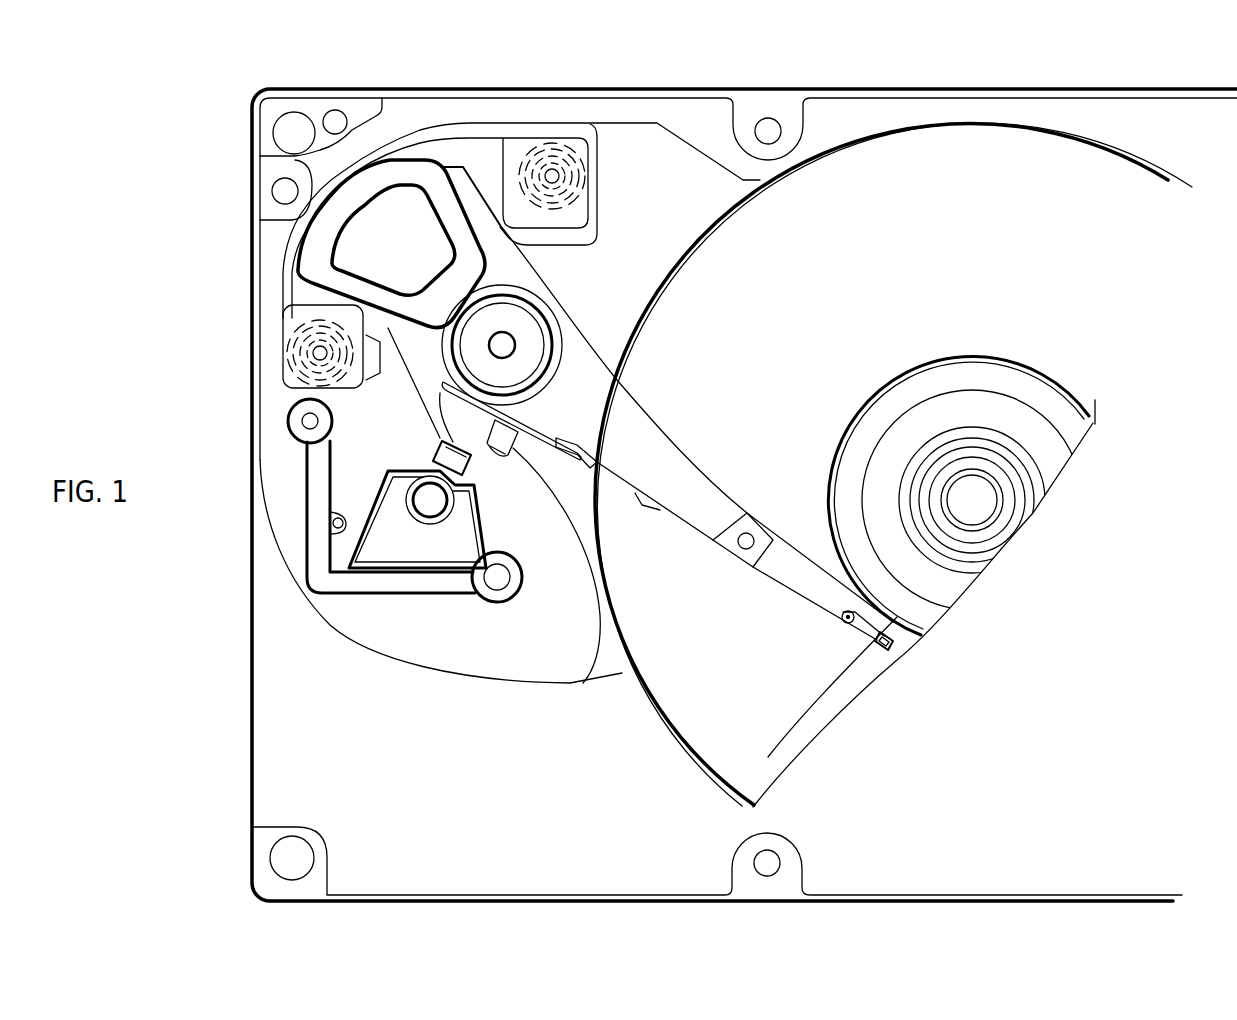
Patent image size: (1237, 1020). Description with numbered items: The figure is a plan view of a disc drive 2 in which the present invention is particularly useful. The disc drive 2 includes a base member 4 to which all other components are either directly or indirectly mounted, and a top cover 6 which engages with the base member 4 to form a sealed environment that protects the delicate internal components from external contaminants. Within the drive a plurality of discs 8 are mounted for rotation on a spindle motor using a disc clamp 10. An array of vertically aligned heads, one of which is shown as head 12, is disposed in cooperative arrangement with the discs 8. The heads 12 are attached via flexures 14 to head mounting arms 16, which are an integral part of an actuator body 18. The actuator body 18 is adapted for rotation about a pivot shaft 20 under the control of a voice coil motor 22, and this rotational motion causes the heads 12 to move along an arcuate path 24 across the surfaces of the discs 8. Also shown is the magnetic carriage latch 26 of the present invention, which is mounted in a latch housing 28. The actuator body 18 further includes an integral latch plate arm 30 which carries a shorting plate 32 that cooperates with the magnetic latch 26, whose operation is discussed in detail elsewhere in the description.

The disc drive 2 is at (882, 76).
The base member 4 is at (492, 95).
The top cover 6 is at (285, 777).
The discs 8 is at (975, 145).
The disc clamp 10 is at (964, 375).
The head 12 is at (876, 641).
The flexure 14 is at (800, 589).
The head mounting arm 16 is at (694, 512).
The actuator body 18 is at (553, 307).
The pivot shaft 20 is at (506, 340).
The voice coil motor 22 is at (417, 134).
The arcuate path 24 is at (843, 702).
The magnetic carriage latch 26 is at (435, 497).
The latch housing 28 is at (320, 571).
The latch plate arm 30 is at (437, 393).
The shorting plate 32 is at (433, 443).